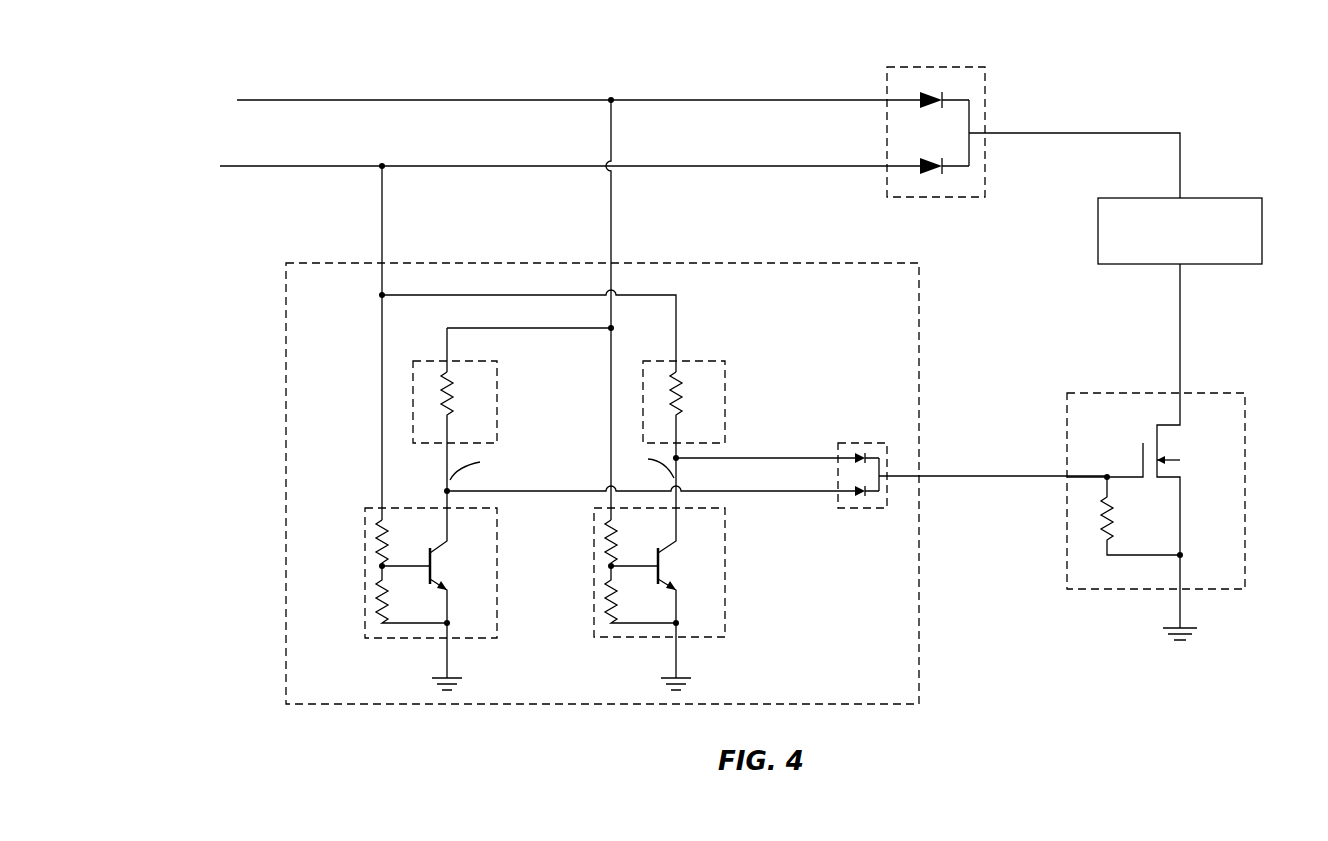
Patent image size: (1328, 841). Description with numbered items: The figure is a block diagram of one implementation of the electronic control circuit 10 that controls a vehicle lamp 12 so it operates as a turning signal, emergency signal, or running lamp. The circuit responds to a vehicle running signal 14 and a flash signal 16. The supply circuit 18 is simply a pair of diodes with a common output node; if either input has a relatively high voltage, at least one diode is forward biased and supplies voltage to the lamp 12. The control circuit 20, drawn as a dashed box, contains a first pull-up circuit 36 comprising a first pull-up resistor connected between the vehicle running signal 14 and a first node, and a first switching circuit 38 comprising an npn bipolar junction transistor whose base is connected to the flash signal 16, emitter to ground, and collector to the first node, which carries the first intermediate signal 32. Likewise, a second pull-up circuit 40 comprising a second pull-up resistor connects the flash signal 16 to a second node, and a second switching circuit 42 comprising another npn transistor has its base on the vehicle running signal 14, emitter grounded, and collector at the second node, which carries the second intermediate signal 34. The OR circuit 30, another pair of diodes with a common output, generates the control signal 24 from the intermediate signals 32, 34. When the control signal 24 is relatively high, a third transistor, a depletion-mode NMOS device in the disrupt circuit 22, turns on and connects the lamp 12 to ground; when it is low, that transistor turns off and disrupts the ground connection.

The electronic control circuit 10 is at (1152, 42).
The lamp 12 is at (1170, 249).
The vehicle running signal 14 is at (333, 99).
The flash signal 16 is at (268, 167).
The supply circuit 18 is at (985, 93).
The control circuit 20 is at (636, 402).
The disrupt circuit 22 is at (1245, 420).
The control signal 24 is at (968, 480).
The OR circuit 30 is at (850, 443).
The first intermediate signal 32 is at (803, 493).
The second intermediate signal 34 is at (790, 457).
The first pull-up circuit 36 is at (497, 378).
The first switching circuit 38 is at (497, 533).
The second pull-up circuit 40 is at (725, 378).
The second switching circuit 42 is at (725, 533).